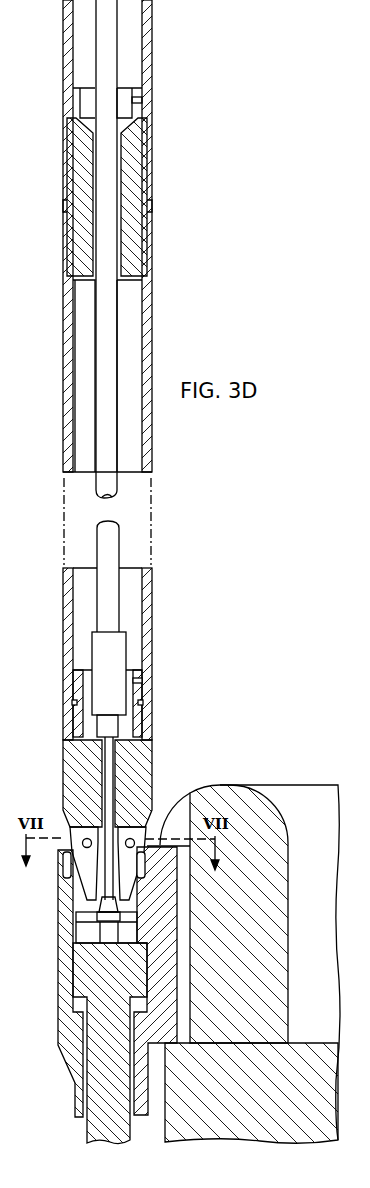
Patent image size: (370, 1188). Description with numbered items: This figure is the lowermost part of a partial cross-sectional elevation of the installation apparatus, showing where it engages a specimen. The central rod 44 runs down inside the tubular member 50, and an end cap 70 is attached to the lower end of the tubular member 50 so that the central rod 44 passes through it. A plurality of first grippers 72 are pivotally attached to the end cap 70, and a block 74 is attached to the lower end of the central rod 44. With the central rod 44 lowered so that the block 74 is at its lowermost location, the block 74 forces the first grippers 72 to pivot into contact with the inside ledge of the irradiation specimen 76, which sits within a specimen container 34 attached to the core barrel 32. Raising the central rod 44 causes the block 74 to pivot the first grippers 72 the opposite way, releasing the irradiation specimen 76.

The core barrel 32 is at (240, 807).
The specimen container 34 is at (70, 974).
The central rod 44 is at (102, 32).
The tubular member 50 is at (147, 640).
The end cap 70 is at (138, 765).
The first grippers 72 is at (143, 838).
The block 74 is at (100, 918).
The irradiation specimen 76 is at (103, 980).